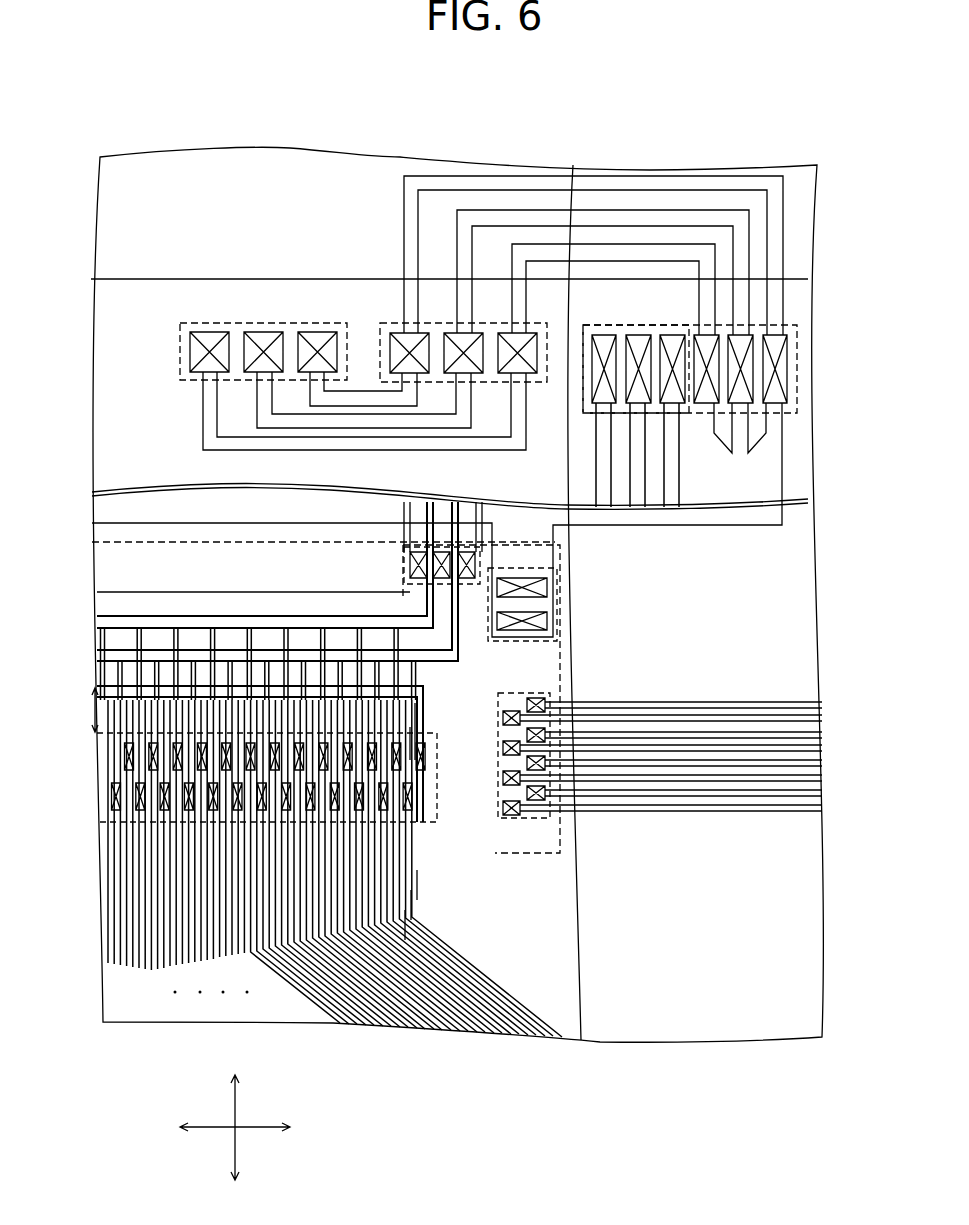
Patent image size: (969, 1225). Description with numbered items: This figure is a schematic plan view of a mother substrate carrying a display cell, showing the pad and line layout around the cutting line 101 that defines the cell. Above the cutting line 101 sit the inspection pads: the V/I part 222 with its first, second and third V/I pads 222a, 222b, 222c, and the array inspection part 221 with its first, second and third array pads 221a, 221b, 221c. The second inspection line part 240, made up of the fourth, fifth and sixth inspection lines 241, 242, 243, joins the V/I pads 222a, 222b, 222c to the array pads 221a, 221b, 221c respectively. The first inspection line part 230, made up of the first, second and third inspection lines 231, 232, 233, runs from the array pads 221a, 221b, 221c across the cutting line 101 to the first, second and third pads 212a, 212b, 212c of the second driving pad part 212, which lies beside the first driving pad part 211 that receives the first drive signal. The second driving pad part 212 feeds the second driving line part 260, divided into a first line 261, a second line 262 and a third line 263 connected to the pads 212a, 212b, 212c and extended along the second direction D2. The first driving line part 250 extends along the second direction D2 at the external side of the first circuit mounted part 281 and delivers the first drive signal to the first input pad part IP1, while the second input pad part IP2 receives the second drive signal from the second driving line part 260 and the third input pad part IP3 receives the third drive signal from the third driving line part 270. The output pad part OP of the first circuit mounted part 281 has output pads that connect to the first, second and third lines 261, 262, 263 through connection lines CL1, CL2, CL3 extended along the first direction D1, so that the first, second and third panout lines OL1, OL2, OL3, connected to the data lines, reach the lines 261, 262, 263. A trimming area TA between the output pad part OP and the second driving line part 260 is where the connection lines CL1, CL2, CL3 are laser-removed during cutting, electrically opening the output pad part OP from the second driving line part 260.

The cutting line 101 is at (122, 279).
The first driving pad part 211 is at (706, 373).
The second driving pad part 212 is at (637, 366).
The first pad 212a is at (672, 335).
The second pad 212b is at (638, 335).
The third pad 212c is at (604, 335).
The array inspection part 221 is at (454, 382).
The first array pad 221a is at (418, 373).
The second array pad 221b is at (471, 373).
The third array pad 221c is at (526, 373).
The V/I part 222 is at (231, 337).
The first V/I pad 222a is at (314, 332).
The second V/I pad 222b is at (263, 332).
The third V/I pad 222c is at (208, 332).
The first inspection line part 230 is at (593, 214).
The first inspection line 231 is at (523, 180).
The second inspection line 232 is at (517, 218).
The third inspection line 233 is at (517, 253).
The second inspection line part 240 is at (364, 441).
The fourth inspection line 241 is at (318, 407).
The fifth inspection line 242 is at (355, 416).
The sixth inspection line 243 is at (290, 478).
The first driving line part 250 is at (776, 484).
The second driving line part 260 is at (380, 612).
The first line 261 is at (595, 565).
The second line 262 is at (638, 507).
The third line 263 is at (603, 507).
The third driving line part 270 is at (687, 769).
The first circuit mounted part 281 is at (180, 543).
The first connection line CL1 is at (415, 703).
The second connection line CL2 is at (410, 727).
The third connection line CL3 is at (408, 749).
The first panout line OL1 is at (405, 908).
The second panout line OL2 is at (411, 887).
The third panout line OL3 is at (417, 867).
The first input pad part IP1 is at (523, 640).
The second input pad part IP2 is at (476, 565).
The third input pad part IP3 is at (530, 820).
The output pad part OP is at (125, 823).
The trimming area TA is at (250, 755).
The first direction D1 is at (235, 1145).
The second direction D2 is at (255, 1126).